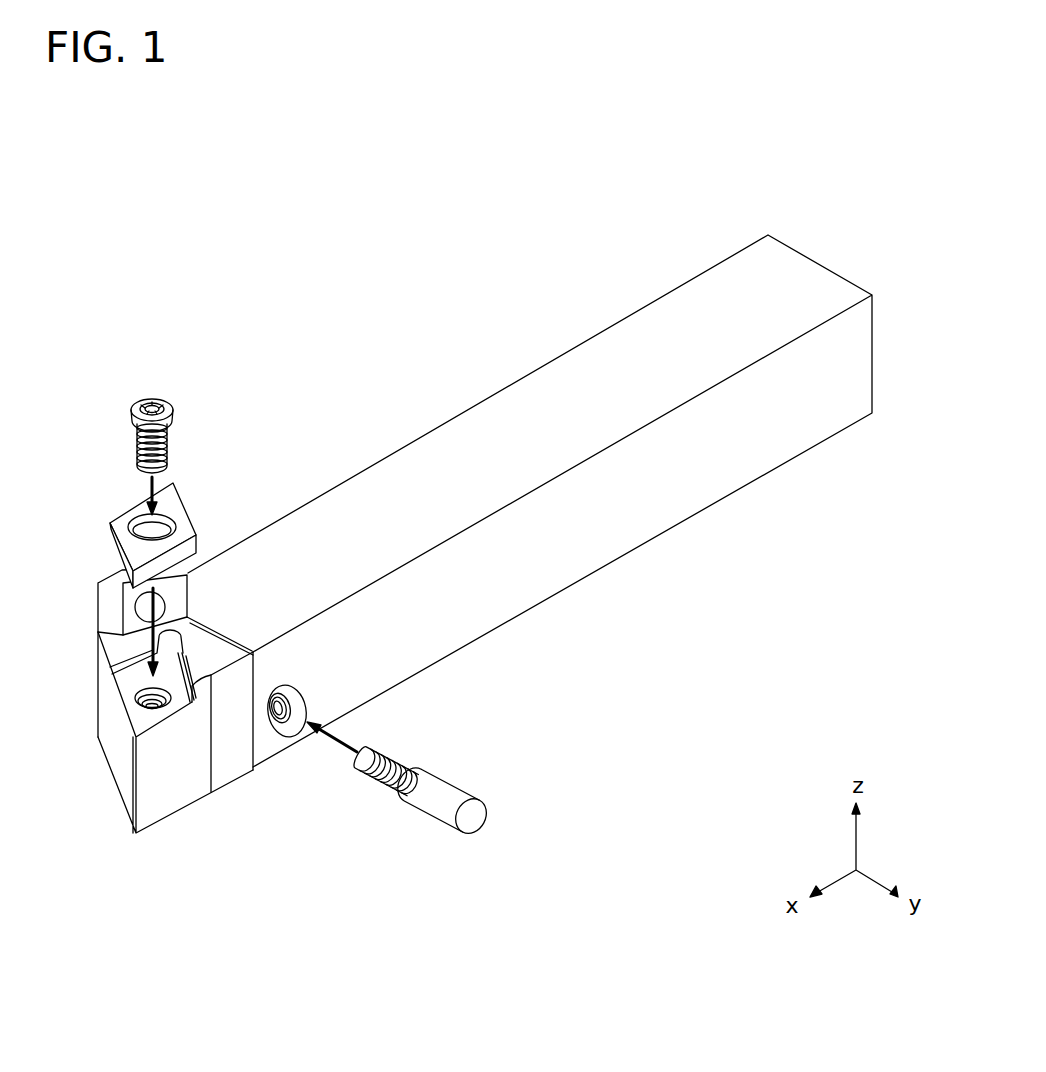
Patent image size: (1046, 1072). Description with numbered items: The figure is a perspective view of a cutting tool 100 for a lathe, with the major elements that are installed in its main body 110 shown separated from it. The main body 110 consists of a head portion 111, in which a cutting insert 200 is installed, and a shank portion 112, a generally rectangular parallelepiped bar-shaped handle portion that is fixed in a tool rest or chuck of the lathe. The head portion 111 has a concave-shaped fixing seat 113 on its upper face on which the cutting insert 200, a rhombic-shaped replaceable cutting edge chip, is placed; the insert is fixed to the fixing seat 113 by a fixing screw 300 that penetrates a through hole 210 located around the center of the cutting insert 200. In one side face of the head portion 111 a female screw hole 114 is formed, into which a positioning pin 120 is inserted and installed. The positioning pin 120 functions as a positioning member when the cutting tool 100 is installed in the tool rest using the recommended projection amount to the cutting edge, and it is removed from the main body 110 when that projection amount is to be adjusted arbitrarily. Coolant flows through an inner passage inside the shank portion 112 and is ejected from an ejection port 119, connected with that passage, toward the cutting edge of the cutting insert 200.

The cutting tool 100 is at (442, 576).
The main body 110 is at (442, 544).
The head portion 111 is at (377, 718).
The shank portion 112 is at (878, 423).
The fixing seat 113 is at (133, 721).
The female screw hole 114 is at (298, 707).
The ejection port 119 is at (137, 611).
The positioning pin 120 is at (450, 787).
The cutting insert 200 is at (133, 569).
The through hole 210 is at (172, 517).
The fixing screw 300 is at (172, 402).